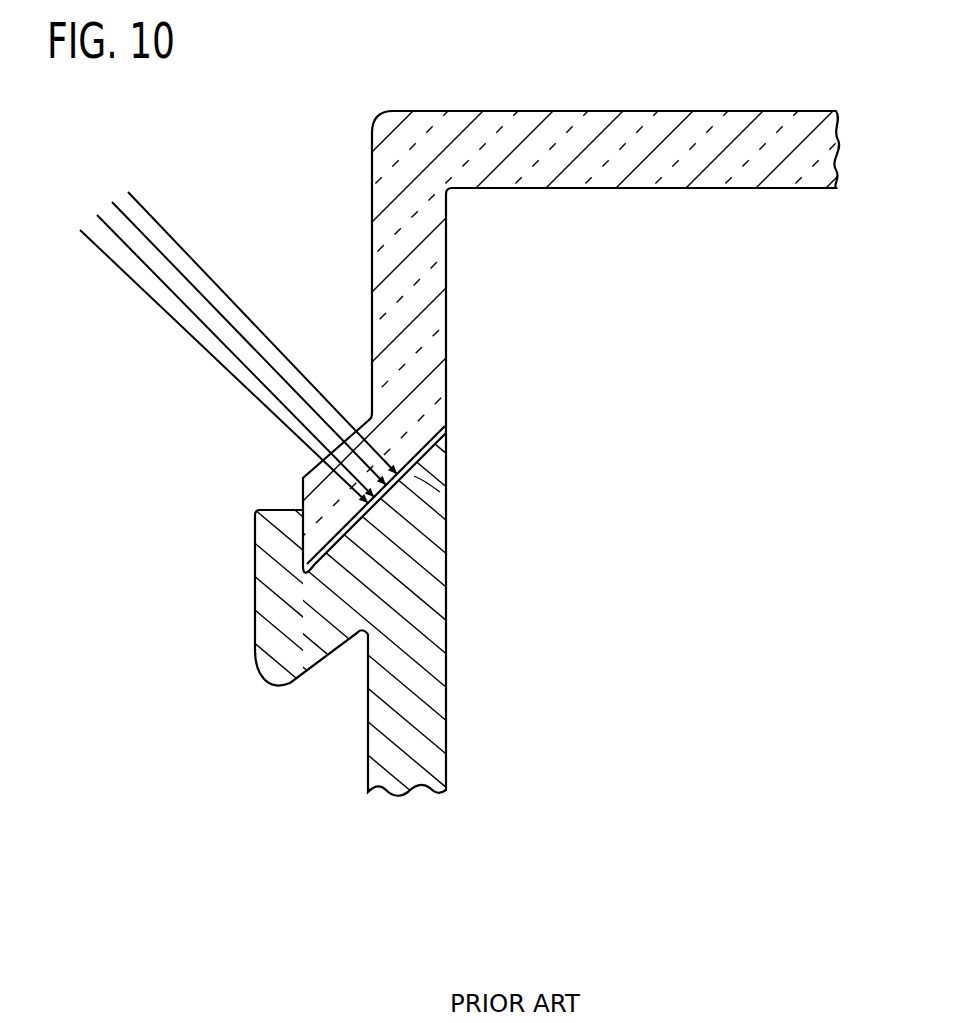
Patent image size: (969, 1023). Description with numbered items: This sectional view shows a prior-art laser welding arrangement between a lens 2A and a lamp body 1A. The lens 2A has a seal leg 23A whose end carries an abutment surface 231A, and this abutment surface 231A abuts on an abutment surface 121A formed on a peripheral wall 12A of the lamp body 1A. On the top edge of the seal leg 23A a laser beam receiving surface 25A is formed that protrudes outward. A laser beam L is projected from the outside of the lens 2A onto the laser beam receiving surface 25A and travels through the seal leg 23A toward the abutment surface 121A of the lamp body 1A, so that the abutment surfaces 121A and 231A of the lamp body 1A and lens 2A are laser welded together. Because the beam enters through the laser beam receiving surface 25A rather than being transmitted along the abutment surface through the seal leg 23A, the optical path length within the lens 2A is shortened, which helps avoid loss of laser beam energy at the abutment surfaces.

The lens 2A is at (606, 125).
The seal leg 23A is at (429, 349).
The abutment surface 231A is at (440, 492).
The laser beam receiving surface 25A is at (303, 478).
The abutment surface 121A is at (300, 516).
The peripheral wall 12A is at (425, 652).
The lamp body 1A is at (443, 767).
The laser beam L is at (205, 270).